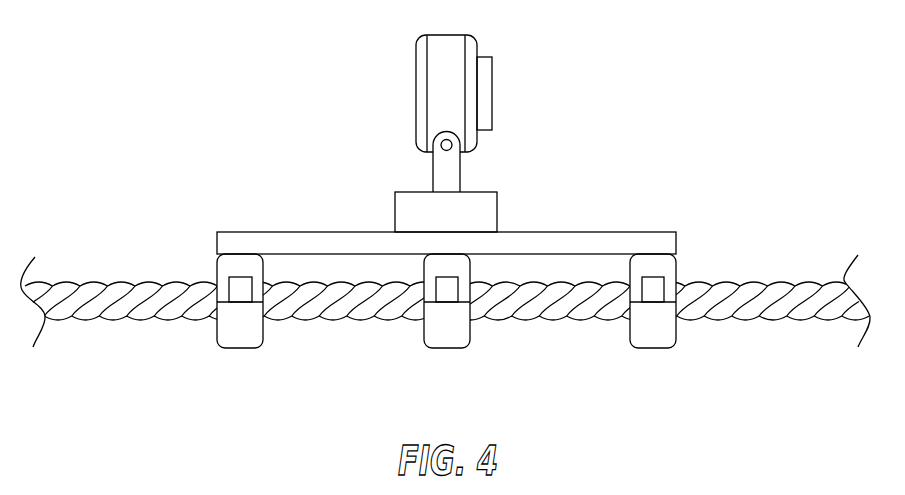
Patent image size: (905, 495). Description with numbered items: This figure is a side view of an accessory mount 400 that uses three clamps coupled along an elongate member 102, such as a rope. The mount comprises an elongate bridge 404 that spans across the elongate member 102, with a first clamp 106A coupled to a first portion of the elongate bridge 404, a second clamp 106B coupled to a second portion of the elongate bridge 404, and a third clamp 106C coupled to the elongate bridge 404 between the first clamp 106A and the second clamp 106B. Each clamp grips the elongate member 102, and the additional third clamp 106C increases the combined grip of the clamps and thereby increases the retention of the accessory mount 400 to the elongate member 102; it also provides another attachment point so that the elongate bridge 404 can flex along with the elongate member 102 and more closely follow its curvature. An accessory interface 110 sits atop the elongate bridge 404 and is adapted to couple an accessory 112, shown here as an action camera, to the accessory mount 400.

The accessory mount 400 is at (723, 65).
The elongate member 102 is at (792, 302).
The elongate bridge 404 is at (310, 232).
The first clamp 106A is at (238, 350).
The second clamp 106B is at (653, 350).
The third clamp 106C is at (447, 350).
The accessory 112 is at (416, 97).
The accessory interface 110 is at (497, 208).